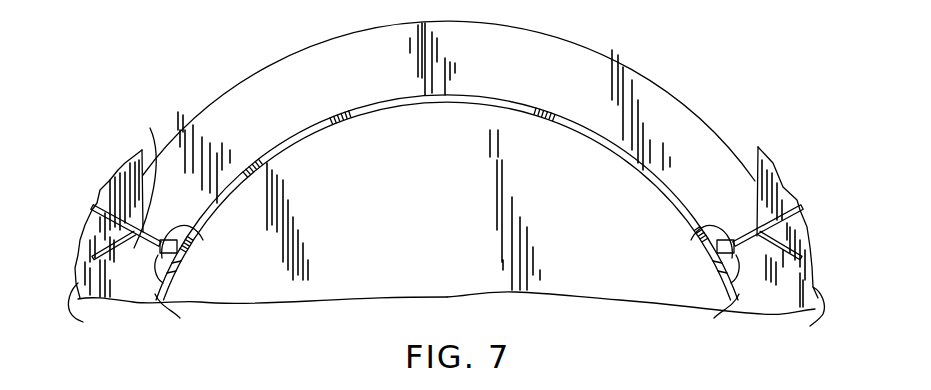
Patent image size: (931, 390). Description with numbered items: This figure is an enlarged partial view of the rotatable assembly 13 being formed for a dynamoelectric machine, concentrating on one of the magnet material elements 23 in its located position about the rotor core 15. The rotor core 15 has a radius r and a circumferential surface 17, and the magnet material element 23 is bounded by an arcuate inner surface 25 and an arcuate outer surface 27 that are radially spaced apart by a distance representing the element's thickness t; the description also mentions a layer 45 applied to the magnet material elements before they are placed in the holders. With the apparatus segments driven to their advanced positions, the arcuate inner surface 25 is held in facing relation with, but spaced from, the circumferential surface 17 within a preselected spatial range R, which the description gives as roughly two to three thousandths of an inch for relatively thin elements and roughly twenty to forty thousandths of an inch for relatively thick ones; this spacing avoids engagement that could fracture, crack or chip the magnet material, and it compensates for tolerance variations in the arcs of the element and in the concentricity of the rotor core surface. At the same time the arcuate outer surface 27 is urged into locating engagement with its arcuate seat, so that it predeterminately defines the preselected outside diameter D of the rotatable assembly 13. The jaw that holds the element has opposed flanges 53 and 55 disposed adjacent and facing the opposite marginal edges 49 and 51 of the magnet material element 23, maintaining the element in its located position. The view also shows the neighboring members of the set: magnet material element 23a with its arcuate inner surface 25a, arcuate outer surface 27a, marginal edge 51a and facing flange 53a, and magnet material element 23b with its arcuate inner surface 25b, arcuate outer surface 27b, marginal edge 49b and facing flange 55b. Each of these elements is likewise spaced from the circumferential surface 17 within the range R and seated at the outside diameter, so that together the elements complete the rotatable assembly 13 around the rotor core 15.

The rotatable assembly 13 is at (692, 37).
The rotor core 15 is at (467, 203).
The circumferential surface 17 is at (472, 103).
The magnet material element 23 is at (540, 47).
The arcuate inner surface 25 is at (361, 106).
The arcuate outer surface 27 is at (320, 40).
The shell coating layer 45 is at (548, 109).
The marginal edge 49 is at (707, 233).
The marginal edge 49b is at (176, 273).
The marginal edge 51 is at (197, 222).
The marginal edge 51a is at (727, 273).
The flange 53 is at (150, 132).
The flange 53a is at (762, 243).
The flange 55 is at (740, 232).
The flange 55b is at (136, 246).
The arcuate inner surface 25b is at (180, 309).
The arcuate inner surface 25a is at (722, 302).
The magnet material element 23b is at (124, 290).
The magnet material element 23a is at (768, 302).
The arcuate outer surface 27b is at (91, 313).
The arcuate outer surface 27a is at (803, 316).